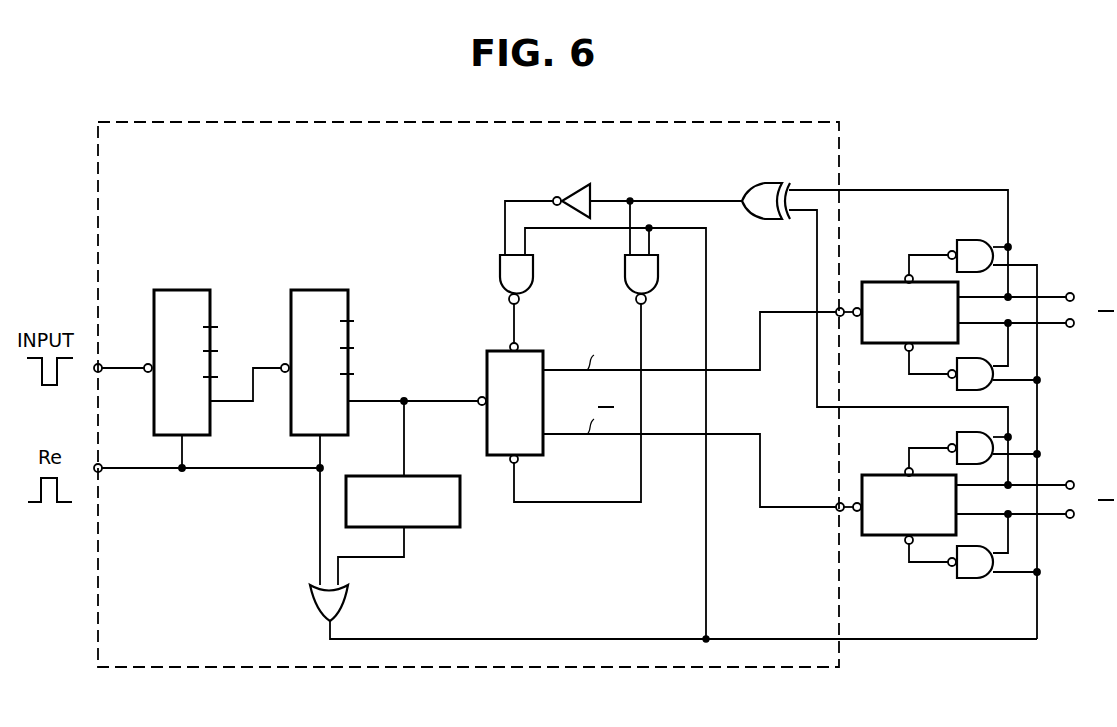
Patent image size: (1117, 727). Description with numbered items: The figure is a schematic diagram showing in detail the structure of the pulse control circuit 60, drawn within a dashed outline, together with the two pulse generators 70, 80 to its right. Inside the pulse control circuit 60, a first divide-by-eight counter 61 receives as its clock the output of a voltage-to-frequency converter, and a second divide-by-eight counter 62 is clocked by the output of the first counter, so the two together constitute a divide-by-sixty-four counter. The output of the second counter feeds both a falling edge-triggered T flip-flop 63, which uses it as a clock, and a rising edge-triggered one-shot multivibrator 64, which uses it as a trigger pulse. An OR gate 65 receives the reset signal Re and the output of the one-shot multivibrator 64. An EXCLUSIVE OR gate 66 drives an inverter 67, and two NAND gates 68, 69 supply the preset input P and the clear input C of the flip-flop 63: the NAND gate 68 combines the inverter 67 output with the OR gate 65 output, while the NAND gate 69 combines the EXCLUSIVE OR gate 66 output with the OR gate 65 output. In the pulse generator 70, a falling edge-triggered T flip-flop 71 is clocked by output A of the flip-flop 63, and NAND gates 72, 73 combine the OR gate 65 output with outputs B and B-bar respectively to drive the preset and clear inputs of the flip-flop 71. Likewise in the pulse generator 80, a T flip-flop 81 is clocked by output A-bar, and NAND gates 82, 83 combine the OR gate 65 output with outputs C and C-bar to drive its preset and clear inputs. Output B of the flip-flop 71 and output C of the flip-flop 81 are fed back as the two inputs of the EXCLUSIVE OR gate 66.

The pulse control circuit 60 is at (358, 121).
The divide-by-eight counter 61 is at (189, 289).
The divide-by-eight counter 62 is at (336, 289).
The T flip-flop 63 is at (496, 456).
The one-shot multivibrator 64 is at (459, 527).
The OR gate 65 is at (358, 597).
The EXCLUSIVE OR gate 66 is at (768, 183).
The inverter 67 is at (583, 186).
The NAND gate 68 is at (496, 277).
The NAND gate 69 is at (658, 290).
The pulse generator 70 is at (988, 422).
The T flip-flop 71 is at (884, 282).
The NAND gate 72 is at (979, 241).
The NAND gate 73 is at (957, 386).
The pulse generator 80 is at (985, 523).
The T flip-flop 81 is at (884, 476).
The NAND gate 82 is at (957, 437).
The NAND gate 83 is at (975, 582).